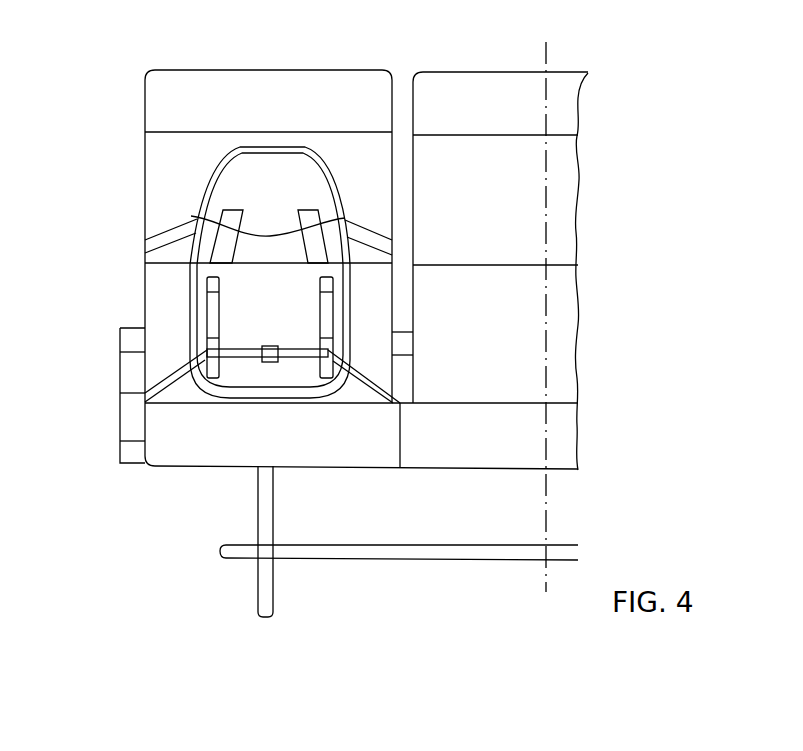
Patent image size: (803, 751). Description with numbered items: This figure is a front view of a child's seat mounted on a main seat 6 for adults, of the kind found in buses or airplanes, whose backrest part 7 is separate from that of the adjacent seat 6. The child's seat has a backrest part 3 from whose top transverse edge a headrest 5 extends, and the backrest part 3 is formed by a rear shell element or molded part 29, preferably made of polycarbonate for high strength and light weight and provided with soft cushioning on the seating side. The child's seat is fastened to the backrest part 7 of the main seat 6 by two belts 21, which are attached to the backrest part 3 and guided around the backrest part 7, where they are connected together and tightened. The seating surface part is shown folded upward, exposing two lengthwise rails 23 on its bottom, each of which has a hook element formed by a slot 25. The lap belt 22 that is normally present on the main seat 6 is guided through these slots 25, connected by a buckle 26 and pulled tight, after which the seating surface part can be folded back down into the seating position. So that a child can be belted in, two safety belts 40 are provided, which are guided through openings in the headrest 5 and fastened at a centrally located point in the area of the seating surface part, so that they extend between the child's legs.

The main seat 6 is at (143, 70).
The backrest part 7 is at (240, 85).
The headrest 5 is at (236, 178).
The backrest part 3 is at (205, 235).
The belts 21 is at (175, 233).
The safety belts 40 is at (315, 238).
The lengthwise rails 23 is at (327, 303).
The slot 25 is at (212, 351).
The buckle 26 is at (262, 355).
The lap belt 22 is at (170, 375).
The molded part 29 is at (232, 372).